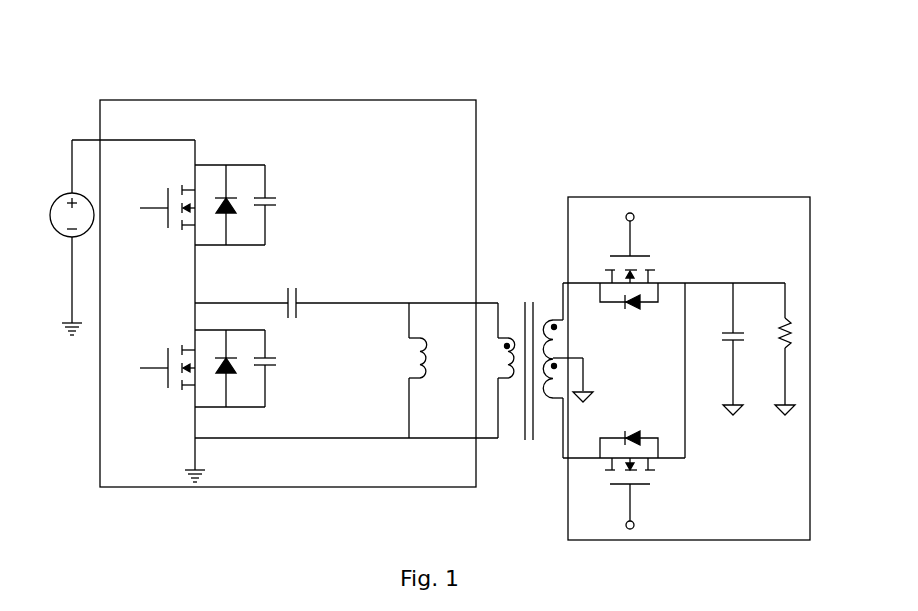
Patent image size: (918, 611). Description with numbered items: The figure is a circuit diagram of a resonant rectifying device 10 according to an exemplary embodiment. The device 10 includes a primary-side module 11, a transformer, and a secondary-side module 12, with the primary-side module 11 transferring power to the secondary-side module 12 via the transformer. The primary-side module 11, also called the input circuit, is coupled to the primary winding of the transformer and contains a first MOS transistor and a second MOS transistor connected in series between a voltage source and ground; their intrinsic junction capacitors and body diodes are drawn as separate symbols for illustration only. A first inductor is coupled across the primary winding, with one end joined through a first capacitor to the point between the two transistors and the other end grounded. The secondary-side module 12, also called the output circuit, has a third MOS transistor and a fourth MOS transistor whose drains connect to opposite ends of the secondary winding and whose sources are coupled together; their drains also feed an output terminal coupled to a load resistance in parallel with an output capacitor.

The resonant rectifying device 10 is at (600, 99).
The primary-side module 11 is at (323, 293).
The secondary-side module 12 is at (689, 349).